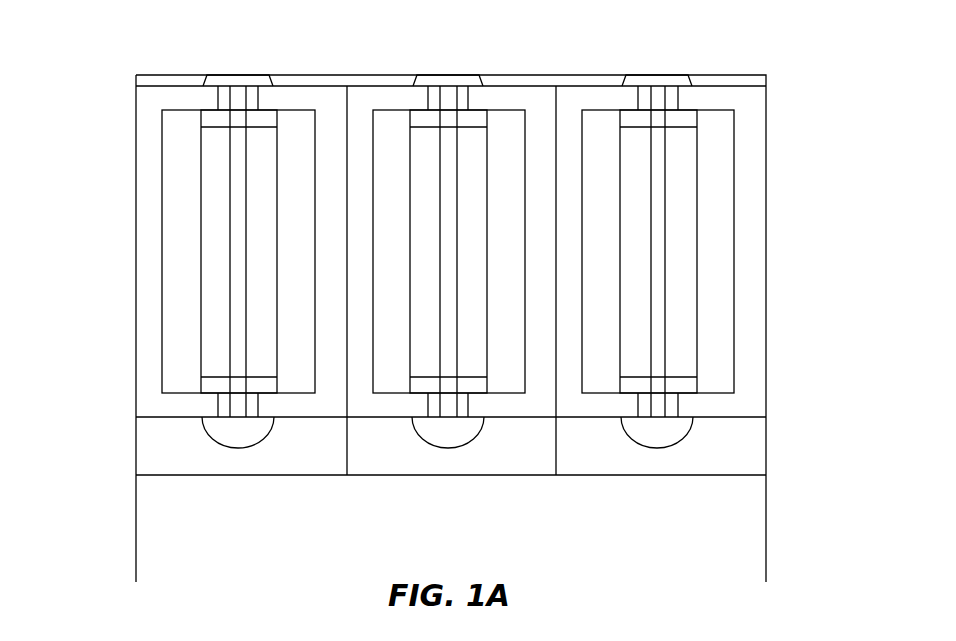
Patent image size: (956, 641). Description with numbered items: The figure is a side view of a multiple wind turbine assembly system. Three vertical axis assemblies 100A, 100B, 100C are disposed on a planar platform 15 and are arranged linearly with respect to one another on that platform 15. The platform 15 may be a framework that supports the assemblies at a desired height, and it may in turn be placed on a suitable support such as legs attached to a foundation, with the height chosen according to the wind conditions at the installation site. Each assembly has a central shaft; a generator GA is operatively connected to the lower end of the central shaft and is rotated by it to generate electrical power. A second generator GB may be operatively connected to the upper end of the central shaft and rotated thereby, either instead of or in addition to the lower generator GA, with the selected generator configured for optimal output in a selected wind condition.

The planar platform 15 is at (766, 457).
The vertical axis assembly 100A is at (150, 168).
The vertical axis assembly 100B is at (374, 100).
The vertical axis assembly 100C is at (652, 265).
The generator GA is at (665, 448).
The second generator GB is at (678, 87).